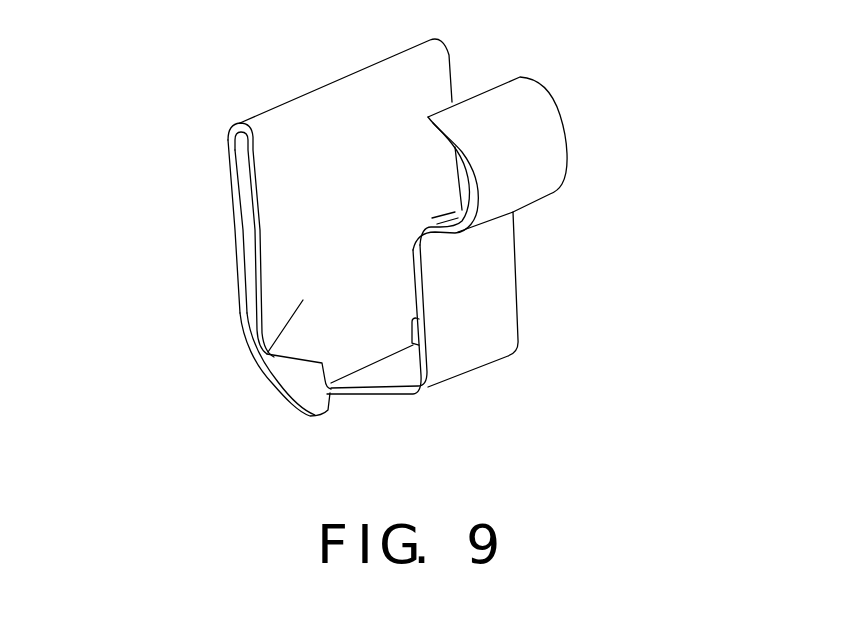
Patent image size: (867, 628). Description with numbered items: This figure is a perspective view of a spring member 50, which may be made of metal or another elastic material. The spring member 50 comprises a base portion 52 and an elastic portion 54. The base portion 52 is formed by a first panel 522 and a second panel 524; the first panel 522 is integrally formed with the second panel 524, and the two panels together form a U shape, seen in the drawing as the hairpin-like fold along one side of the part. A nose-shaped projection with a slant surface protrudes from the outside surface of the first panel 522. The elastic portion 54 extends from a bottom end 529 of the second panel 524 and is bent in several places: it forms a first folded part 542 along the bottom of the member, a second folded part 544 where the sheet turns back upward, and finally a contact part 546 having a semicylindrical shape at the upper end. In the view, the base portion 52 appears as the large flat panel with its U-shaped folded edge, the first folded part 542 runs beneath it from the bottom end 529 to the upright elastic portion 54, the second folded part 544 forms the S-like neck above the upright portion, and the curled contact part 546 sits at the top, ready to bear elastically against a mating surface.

The spring member 50 is at (200, 152).
The base portion 52 is at (253, 307).
The first panel 522 is at (233, 229).
The second panel 524 is at (263, 360).
The bottom end 529 is at (330, 408).
The elastic portion 54 is at (483, 325).
The first folded part 542 is at (450, 383).
The second folded part 544 is at (436, 240).
The contact part 546 is at (520, 143).